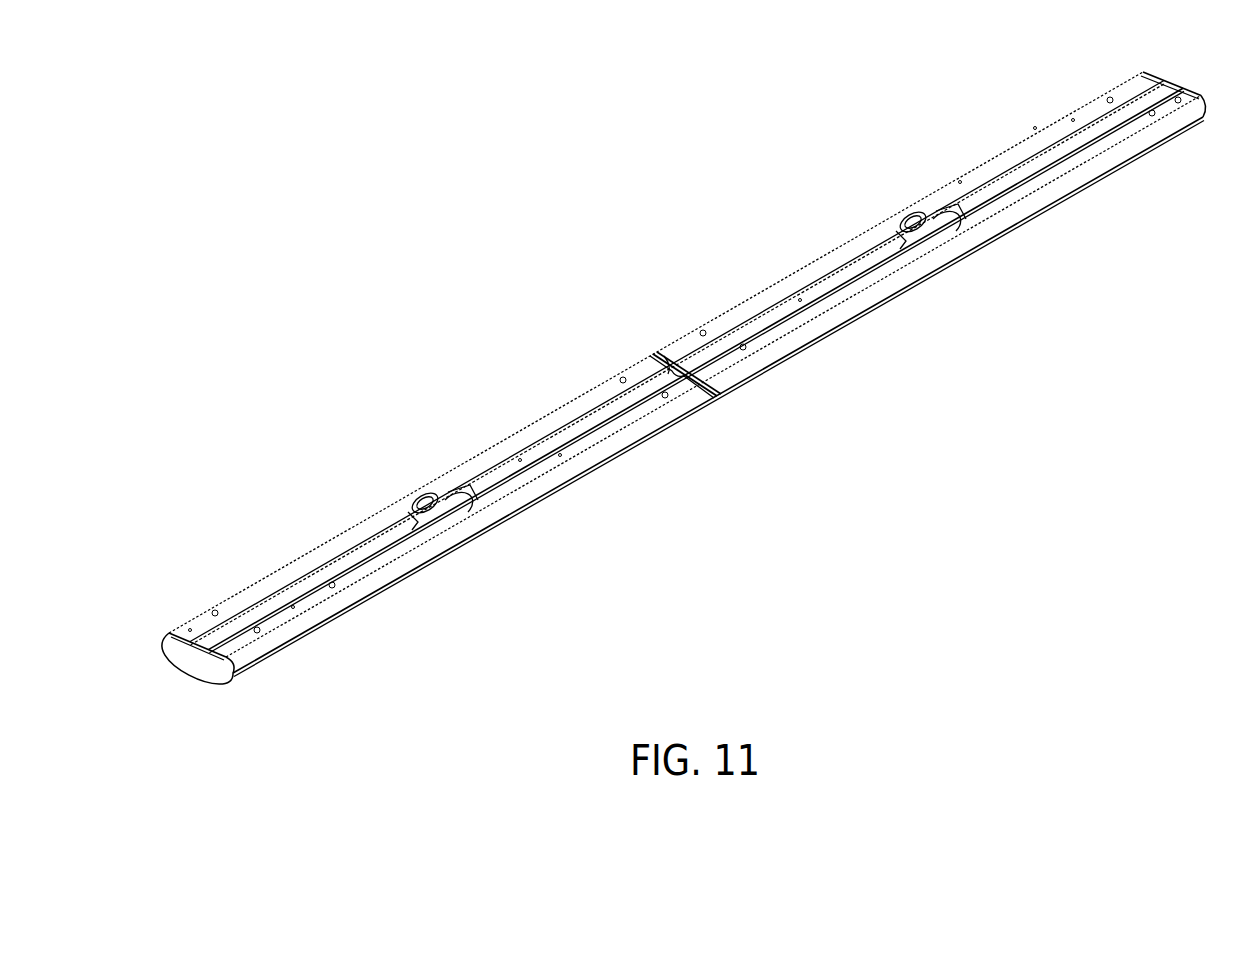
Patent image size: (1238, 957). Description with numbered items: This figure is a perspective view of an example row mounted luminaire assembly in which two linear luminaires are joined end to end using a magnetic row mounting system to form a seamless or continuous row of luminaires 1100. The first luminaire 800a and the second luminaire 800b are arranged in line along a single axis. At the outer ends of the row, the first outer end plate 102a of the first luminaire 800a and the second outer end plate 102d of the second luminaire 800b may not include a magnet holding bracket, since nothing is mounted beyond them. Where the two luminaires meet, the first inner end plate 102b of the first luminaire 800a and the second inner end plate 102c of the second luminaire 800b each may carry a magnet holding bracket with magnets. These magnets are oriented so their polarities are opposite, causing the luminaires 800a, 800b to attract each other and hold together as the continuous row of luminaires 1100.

The row of luminaires 1100 is at (635, 290).
The first outer end plate 102a is at (203, 666).
The first inner end plate 102b is at (717, 400).
The second inner end plate 102c is at (722, 400).
The second outer end plate 102d is at (1206, 100).
The first luminaire 800a is at (465, 444).
The second luminaire 800b is at (884, 204).